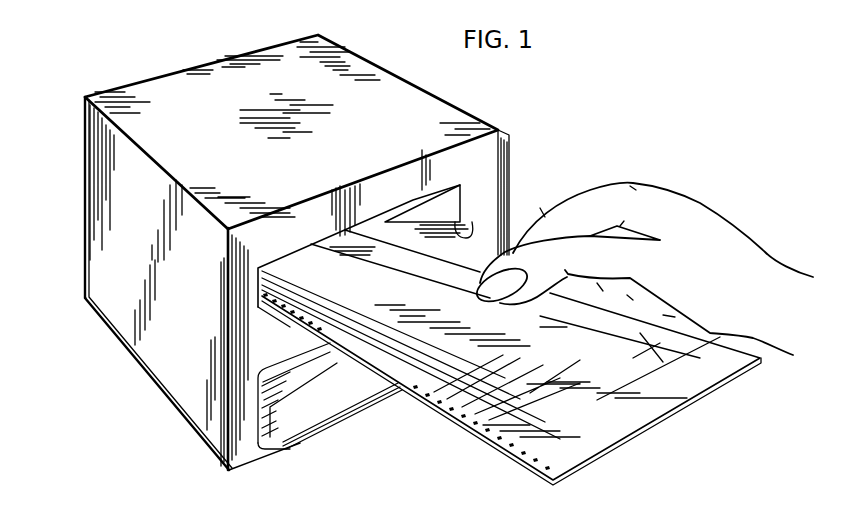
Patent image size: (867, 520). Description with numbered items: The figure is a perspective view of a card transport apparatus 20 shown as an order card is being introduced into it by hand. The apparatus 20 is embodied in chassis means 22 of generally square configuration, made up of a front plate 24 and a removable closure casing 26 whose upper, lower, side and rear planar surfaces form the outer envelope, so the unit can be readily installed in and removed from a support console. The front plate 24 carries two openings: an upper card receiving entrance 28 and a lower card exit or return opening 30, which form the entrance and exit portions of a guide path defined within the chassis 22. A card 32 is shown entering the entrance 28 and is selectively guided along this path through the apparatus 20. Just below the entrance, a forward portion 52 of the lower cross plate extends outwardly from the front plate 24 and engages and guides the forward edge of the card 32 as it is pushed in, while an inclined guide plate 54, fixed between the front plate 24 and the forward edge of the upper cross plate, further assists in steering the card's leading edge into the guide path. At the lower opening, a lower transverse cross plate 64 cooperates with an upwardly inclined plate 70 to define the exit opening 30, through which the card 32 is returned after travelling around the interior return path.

The transport apparatus 20 is at (103, 346).
The chassis means 22 is at (259, 246).
The front plate 24 is at (502, 150).
The removable closure casing 26 is at (377, 78).
The card receiving entrance 28 is at (442, 218).
The card exit or return opening 30 is at (325, 422).
The card 32 is at (590, 454).
The forward portion of the cross plate 52 is at (466, 232).
The inclined guide plate 54 is at (378, 227).
The lower transverse cross plate 64 is at (290, 443).
The upwardly inclined plate 70 is at (325, 370).